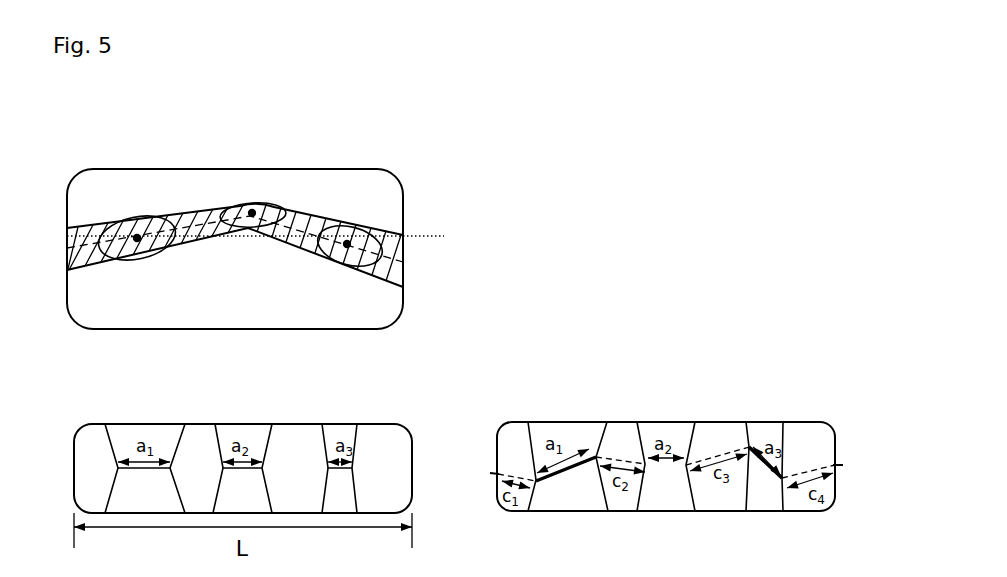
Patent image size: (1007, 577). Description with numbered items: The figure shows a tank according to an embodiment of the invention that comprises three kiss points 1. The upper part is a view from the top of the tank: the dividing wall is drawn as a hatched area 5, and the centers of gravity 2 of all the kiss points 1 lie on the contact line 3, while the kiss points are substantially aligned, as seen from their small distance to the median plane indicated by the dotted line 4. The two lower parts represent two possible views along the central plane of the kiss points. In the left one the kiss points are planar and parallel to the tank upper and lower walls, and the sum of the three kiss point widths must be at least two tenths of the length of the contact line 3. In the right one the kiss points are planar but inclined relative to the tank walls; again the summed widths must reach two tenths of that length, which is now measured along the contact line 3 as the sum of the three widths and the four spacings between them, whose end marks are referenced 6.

The kiss point 1 is at (130, 218).
The center of gravity 2 is at (134, 245).
The contact line 3 is at (404, 265).
The median plane 4 is at (416, 230).
The hatched area 5 is at (316, 222).
The end boundary line 6 is at (494, 461).